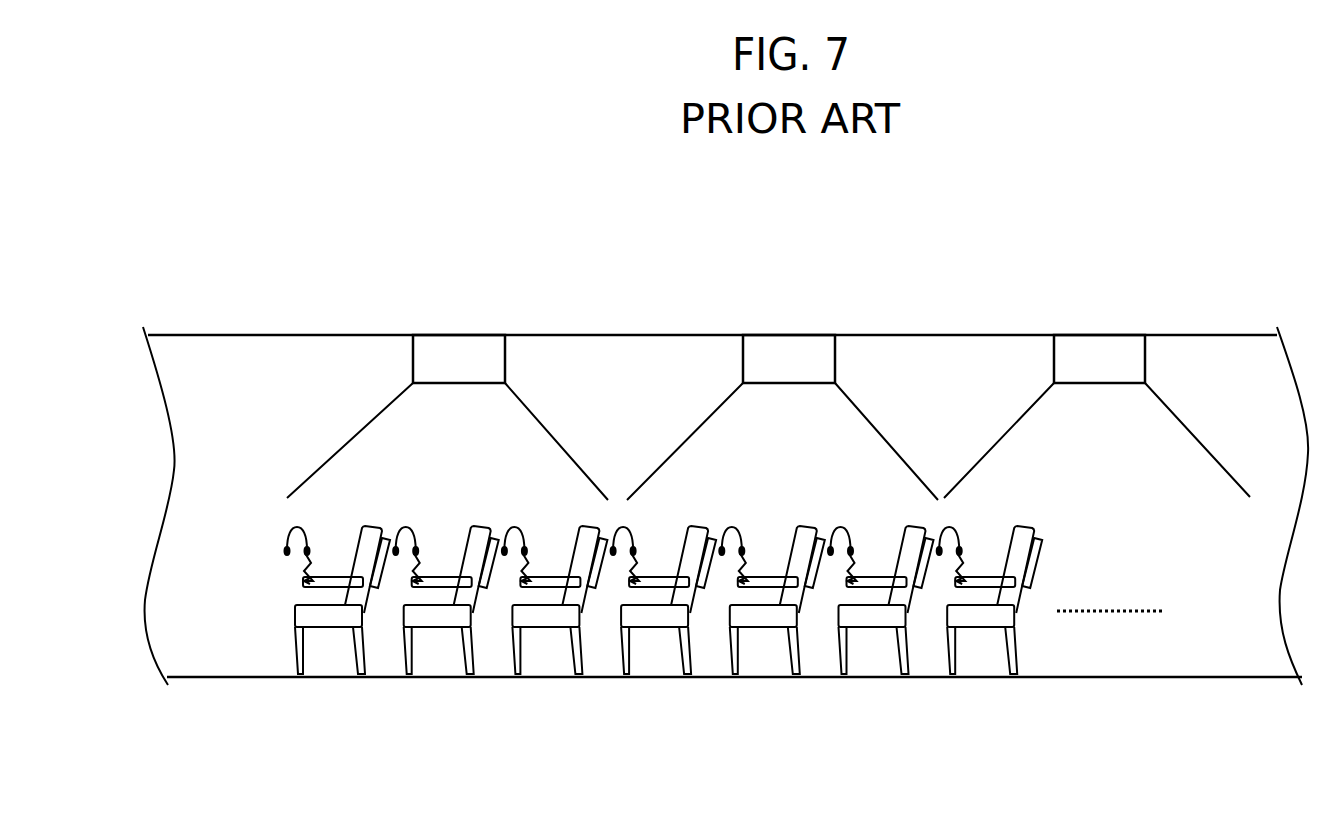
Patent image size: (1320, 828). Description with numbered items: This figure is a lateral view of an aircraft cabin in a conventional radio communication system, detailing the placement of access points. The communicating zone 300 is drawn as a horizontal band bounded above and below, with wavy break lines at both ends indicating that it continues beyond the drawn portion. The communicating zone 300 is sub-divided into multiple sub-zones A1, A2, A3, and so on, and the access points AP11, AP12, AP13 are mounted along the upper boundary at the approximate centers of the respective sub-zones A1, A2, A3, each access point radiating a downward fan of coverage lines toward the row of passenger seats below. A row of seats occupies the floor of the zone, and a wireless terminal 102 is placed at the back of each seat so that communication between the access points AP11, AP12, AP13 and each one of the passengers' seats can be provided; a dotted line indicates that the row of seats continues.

The communicating zone 300 is at (273, 380).
The wireless terminal 102 is at (1040, 543).
The access point AP11 is at (447, 417).
The access point AP12 is at (782, 417).
The access point AP13 is at (1097, 416).
The sub-zone A1 is at (456, 408).
The sub-zone A2 is at (788, 408).
The sub-zone A3 is at (1101, 410).